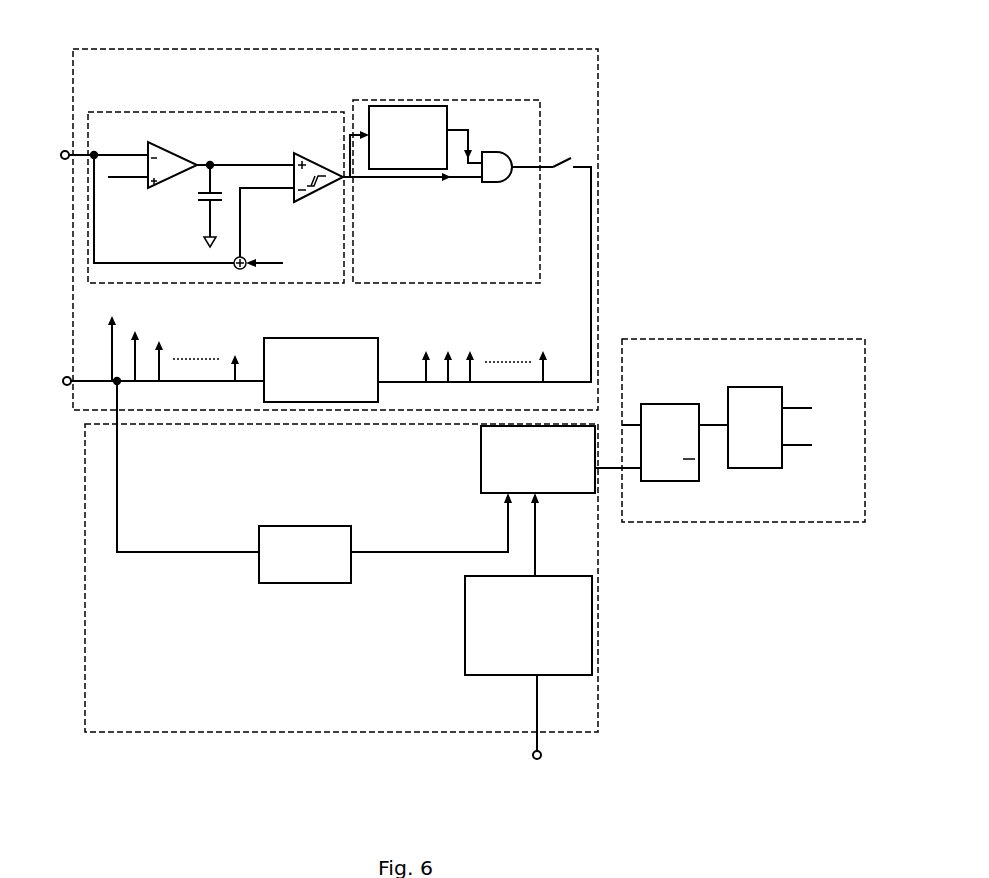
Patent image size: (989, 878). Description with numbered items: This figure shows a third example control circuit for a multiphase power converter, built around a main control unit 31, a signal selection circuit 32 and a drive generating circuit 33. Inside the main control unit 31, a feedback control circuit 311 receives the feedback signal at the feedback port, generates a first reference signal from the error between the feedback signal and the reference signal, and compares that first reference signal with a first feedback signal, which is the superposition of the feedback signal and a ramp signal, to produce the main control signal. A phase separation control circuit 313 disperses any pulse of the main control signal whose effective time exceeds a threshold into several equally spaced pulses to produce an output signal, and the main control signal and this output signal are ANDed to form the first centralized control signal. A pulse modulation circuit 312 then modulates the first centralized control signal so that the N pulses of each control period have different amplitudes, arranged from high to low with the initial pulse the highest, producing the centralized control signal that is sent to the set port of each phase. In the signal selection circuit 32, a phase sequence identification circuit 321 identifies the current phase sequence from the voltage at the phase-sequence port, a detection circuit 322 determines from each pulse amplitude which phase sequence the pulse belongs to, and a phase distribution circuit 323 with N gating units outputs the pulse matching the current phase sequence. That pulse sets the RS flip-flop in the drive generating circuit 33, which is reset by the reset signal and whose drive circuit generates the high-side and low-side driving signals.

The main control unit 31 is at (463, 49).
The feedback control circuit 311 is at (250, 111).
The pulse modulation circuit 312 is at (310, 338).
The phase separation control circuit 313 is at (487, 100).
The signal selection circuit 32 is at (600, 635).
The phase sequence identification circuit 321 is at (470, 647).
The detection circuit 322 is at (323, 526).
The phase distribution circuit 323 is at (481, 480).
The drive generating circuit 33 is at (787, 339).